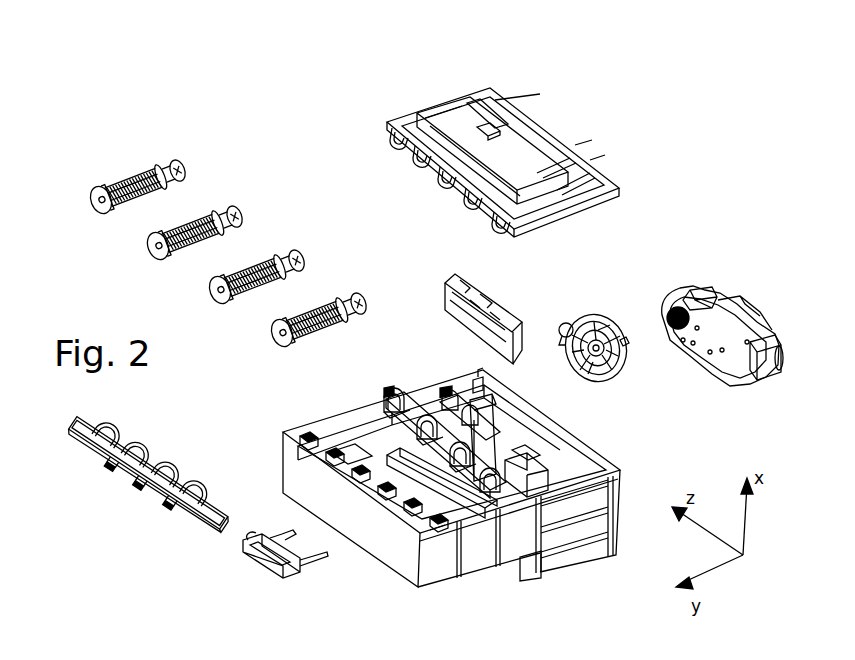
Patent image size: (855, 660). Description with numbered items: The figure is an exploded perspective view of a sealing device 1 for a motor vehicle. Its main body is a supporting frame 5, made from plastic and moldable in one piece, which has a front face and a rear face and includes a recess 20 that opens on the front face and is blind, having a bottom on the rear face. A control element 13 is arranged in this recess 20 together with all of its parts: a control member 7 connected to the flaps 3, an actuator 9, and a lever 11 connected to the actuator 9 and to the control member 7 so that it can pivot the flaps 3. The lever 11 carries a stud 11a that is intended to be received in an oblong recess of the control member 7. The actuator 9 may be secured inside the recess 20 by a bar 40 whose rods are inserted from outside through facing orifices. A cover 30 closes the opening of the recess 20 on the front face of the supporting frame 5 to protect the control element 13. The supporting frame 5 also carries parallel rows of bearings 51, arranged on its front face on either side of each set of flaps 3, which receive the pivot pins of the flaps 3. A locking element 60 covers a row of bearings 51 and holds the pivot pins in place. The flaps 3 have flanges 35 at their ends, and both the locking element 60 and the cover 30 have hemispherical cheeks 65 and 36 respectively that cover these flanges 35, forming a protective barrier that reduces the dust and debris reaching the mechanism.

The sealing device 1 is at (228, 102).
The flaps 3 is at (200, 218).
The supporting frame 5 is at (482, 575).
The control member 7 is at (493, 305).
The actuator 9 is at (727, 286).
The lever 11 is at (600, 315).
The stud 11a is at (563, 335).
The control element 13 is at (742, 152).
The recess 20 is at (598, 450).
The cover 30 is at (423, 108).
The flanges 35 is at (163, 172).
The hemispherical cheeks 36 is at (462, 167).
The bar 40 is at (268, 568).
The bearings 51 is at (437, 432).
The locking element 60 is at (177, 513).
The hemispherical cheeks 65 is at (202, 482).